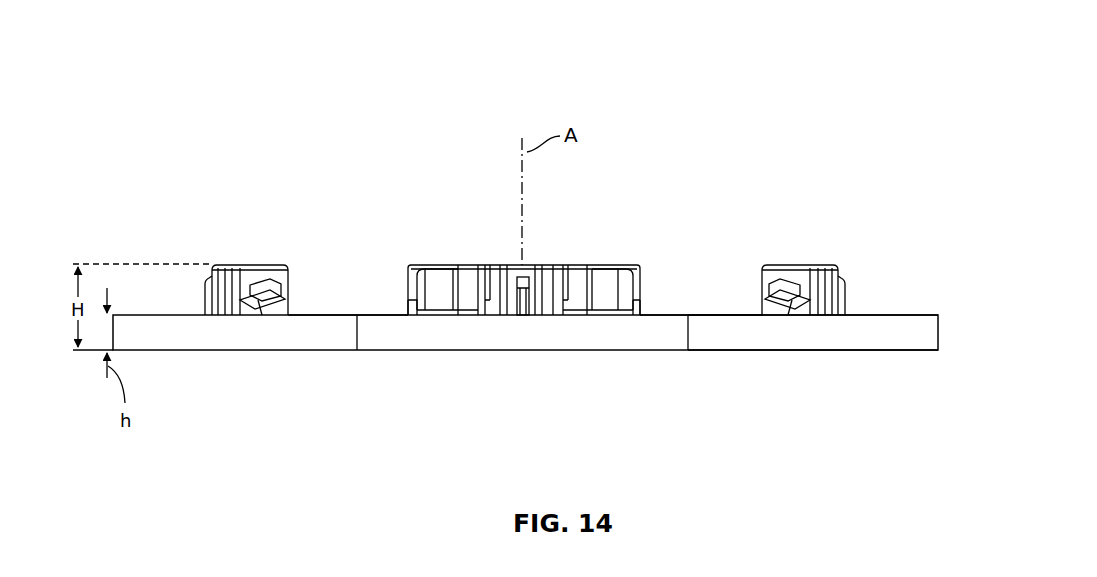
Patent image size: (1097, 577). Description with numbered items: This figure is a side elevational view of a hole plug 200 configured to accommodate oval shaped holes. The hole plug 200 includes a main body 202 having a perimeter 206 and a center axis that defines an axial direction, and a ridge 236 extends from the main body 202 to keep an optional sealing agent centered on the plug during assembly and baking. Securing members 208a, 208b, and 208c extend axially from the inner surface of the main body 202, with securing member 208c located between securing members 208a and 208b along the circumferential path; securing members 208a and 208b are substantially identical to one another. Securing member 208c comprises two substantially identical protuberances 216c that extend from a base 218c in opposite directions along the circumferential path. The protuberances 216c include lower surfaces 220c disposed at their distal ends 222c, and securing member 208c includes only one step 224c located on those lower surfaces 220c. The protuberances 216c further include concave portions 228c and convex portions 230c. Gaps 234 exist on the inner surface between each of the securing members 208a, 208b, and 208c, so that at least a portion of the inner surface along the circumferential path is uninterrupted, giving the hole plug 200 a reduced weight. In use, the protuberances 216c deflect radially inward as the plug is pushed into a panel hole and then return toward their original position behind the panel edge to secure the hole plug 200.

The hole plug 200 is at (218, 84).
The main body 202 is at (889, 339).
The perimeter 206 is at (757, 352).
The ridge 236 is at (921, 327).
The securing member 208a is at (243, 261).
The securing member 208b is at (822, 260).
The securing member 208c is at (523, 316).
The protuberances 216c is at (523, 316).
The base 218c is at (500, 305).
The lower surfaces 220c is at (415, 306).
The distal ends 222c is at (408, 292).
The step 224c is at (404, 300).
The concave portions 228c is at (478, 304).
The convex portions 230c is at (445, 304).
The gaps 234 is at (316, 299).